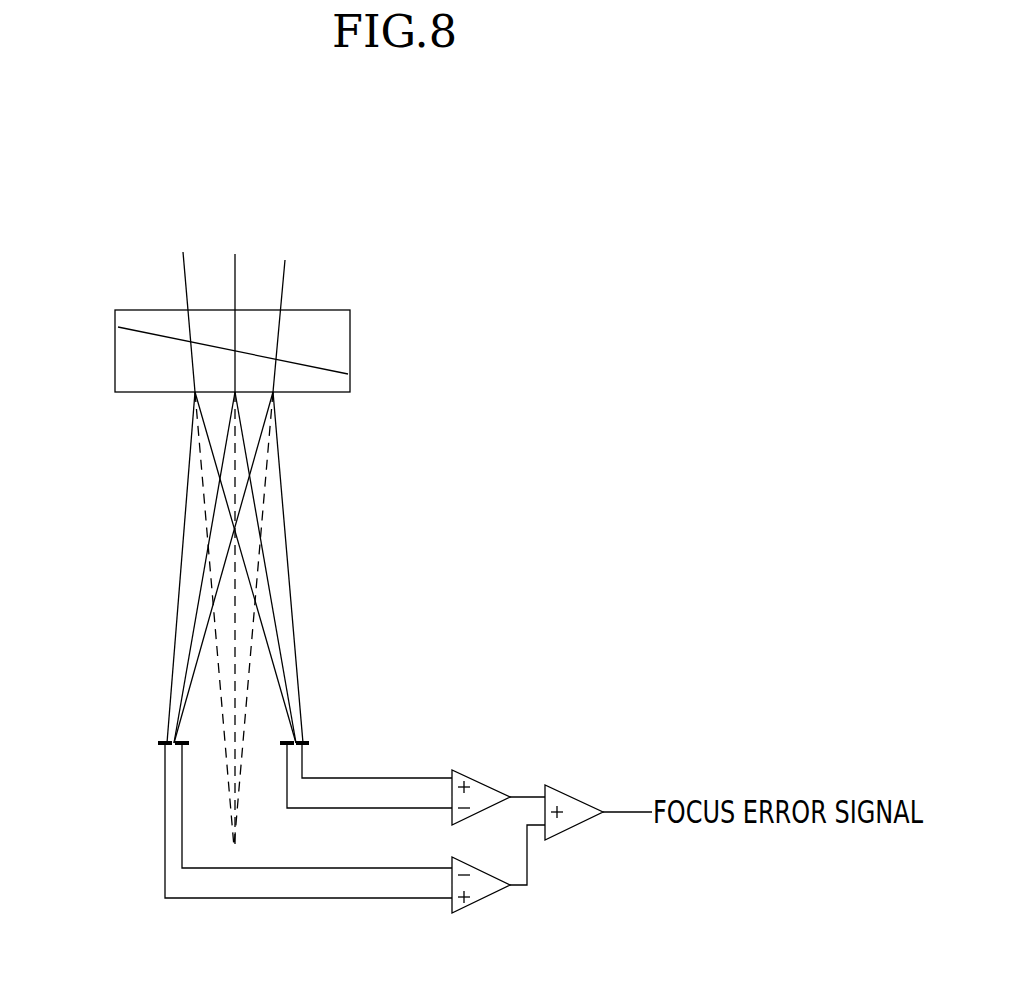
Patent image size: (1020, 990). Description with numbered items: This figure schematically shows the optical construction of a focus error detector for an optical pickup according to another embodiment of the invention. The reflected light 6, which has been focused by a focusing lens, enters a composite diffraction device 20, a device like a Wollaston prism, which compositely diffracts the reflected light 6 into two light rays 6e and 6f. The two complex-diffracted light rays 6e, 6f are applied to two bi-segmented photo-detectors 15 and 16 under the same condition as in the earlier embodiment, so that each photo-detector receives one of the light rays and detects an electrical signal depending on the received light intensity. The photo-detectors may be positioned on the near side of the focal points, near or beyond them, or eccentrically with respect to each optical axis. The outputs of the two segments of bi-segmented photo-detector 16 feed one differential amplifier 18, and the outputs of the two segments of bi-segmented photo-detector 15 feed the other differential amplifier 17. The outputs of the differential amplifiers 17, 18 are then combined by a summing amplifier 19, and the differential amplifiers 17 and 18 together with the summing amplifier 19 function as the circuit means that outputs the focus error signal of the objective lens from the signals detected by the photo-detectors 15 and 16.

The reflected light 6 is at (285, 262).
The composite diffraction device 20 is at (350, 352).
The light ray 6e is at (183, 530).
The light ray 6f is at (287, 530).
The bi-segmented photo-detector 15 is at (157, 743).
The bi-segmented photo-detector 16 is at (310, 743).
The differential amplifier 17 is at (482, 899).
The differential amplifier 18 is at (484, 784).
The summing amplifier 19 is at (587, 820).